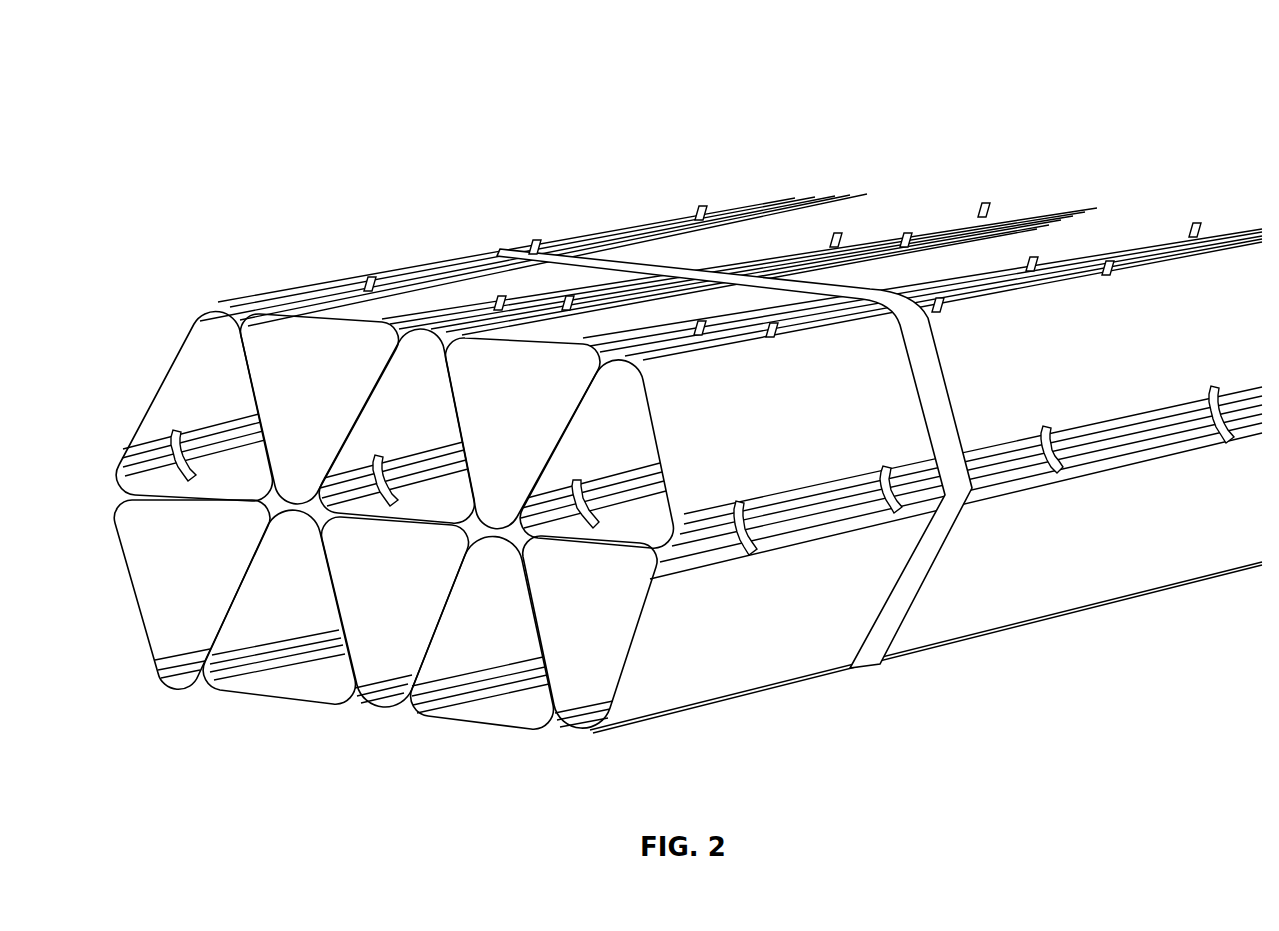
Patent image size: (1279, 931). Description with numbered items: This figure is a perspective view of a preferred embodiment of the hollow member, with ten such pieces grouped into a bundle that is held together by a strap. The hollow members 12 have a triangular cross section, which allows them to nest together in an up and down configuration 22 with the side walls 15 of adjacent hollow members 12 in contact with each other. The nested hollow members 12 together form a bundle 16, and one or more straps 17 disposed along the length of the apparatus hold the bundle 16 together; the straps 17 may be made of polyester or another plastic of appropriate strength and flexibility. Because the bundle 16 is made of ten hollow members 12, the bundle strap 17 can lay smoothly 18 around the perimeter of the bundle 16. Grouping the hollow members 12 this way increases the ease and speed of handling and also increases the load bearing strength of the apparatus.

The hollow member 12 is at (998, 353).
The side wall 15 is at (257, 393).
The bundle 16 is at (633, 222).
The strap 17 is at (504, 249).
The smooth lay of strap 18 is at (888, 582).
The up and down configuration 22 is at (133, 590).